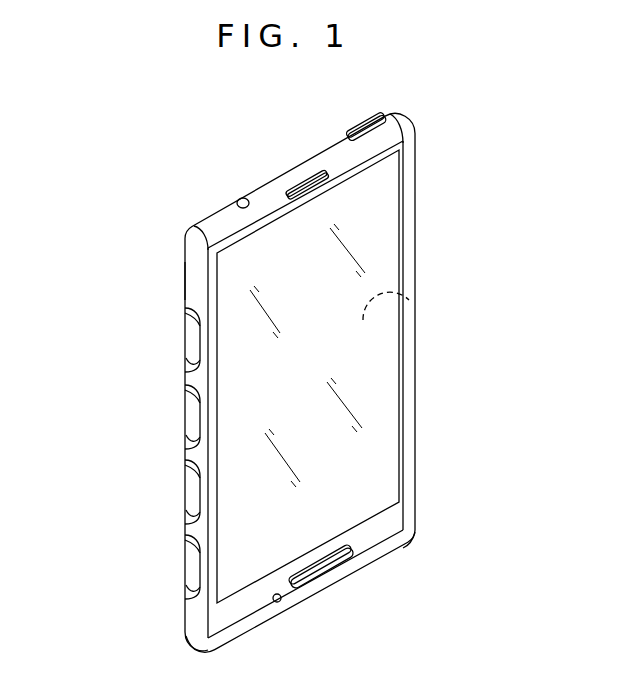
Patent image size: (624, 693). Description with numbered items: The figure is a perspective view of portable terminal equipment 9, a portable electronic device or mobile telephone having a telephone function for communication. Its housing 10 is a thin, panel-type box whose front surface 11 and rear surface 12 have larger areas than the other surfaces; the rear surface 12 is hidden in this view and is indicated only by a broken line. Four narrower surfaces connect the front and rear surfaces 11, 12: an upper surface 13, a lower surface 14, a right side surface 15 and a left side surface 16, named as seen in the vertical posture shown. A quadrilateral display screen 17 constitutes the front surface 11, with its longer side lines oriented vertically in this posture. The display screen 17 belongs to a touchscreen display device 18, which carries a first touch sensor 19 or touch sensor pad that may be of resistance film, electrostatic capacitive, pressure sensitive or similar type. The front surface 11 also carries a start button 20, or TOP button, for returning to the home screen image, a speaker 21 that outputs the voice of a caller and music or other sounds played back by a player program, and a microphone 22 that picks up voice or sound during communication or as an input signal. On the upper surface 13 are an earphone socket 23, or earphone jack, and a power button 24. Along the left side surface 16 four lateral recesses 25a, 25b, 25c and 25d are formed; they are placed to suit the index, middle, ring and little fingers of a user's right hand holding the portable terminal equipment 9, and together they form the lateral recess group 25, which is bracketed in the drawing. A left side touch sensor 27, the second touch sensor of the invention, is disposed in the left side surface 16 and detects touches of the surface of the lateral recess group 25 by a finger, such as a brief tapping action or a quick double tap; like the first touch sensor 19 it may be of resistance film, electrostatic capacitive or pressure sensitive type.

The portable terminal equipment 9 is at (210, 136).
The housing 10 is at (203, 224).
The front surface 11 is at (392, 514).
The rear surface 12 is at (392, 292).
The upper surface 13 is at (285, 182).
The lower surface 14 is at (365, 567).
The right side surface 15 is at (413, 237).
The left side surface 16 is at (188, 262).
The display screen 17 is at (401, 428).
The touchscreen display device 18 is at (355, 358).
The first touch sensor 19 is at (377, 398).
The start button 20 is at (319, 573).
The speaker 21 is at (310, 183).
The microphone 22 is at (277, 602).
The earphone socket 23 is at (247, 198).
The power button 24 is at (362, 130).
The lateral recess group 25 is at (131, 453).
The lateral recess 25a is at (185, 345).
The lateral recess 25b is at (185, 420).
The lateral recess 25c is at (185, 497).
The lateral recess 25d is at (158, 567).
The left side touch sensor 27 is at (190, 292).